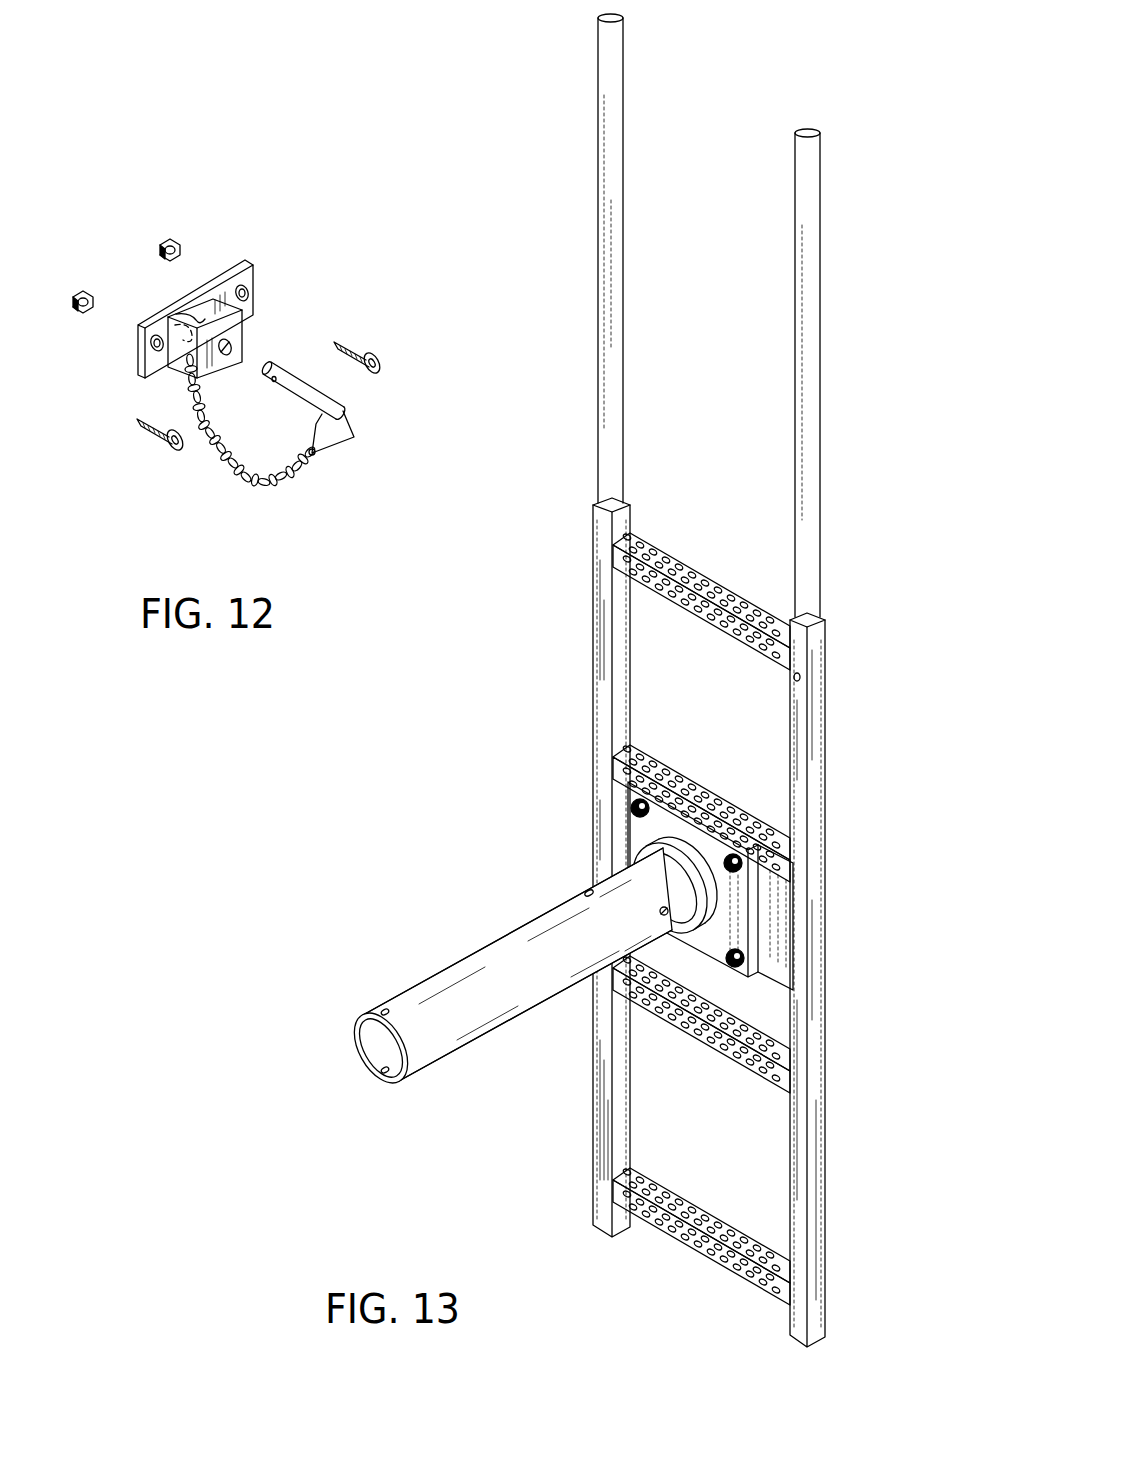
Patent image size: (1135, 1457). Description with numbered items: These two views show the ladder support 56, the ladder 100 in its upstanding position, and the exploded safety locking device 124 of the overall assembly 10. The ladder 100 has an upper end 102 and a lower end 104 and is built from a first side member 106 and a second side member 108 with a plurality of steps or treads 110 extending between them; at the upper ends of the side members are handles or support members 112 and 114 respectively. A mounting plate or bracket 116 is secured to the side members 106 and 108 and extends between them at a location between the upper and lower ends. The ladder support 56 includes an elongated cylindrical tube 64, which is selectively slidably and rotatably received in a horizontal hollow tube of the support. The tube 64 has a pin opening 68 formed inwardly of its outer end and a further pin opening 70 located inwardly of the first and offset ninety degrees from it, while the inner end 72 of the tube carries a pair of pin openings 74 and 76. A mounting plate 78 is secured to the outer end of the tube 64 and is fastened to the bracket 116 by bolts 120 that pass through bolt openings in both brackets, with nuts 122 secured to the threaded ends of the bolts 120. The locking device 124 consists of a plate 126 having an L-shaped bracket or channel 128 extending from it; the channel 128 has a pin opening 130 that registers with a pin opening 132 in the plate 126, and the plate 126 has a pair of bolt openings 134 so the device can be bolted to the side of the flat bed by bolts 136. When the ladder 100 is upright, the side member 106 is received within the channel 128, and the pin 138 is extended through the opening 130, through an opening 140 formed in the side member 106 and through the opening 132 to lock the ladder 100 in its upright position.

In FIG. 13, the ladder assembly 10 is at (602, 685).
In FIG. 13, the ladder support 56 is at (602, 949).
In FIG. 13, the elongated cylindrical tube 64 is at (576, 999).
In FIG. 13, the pin opening 68 is at (668, 912).
In FIG. 13, the pin opening 70 is at (590, 892).
In FIG. 13, the inner end 72 is at (355, 1040).
In FIG. 13, the pin opening 74 is at (384, 1009).
In FIG. 13, the pin opening 76 is at (385, 1074).
In FIG. 13, the mounting plate 78 is at (713, 840).
In FIG. 13, the ladder 100 is at (713, 685).
In FIG. 13, the upper end 102 is at (762, 315).
In FIG. 13, the lower end 104 is at (717, 1282).
In FIG. 13, the first side member 106 is at (863, 980).
In FIG. 13, the second side member 108 is at (586, 1034).
In FIG. 13, the steps or treads 110 is at (717, 1220).
In FIG. 13, the handle or support member 112 is at (812, 386).
In FIG. 13, the handle or support member 114 is at (624, 353).
In FIG. 13, the mounting plate or bracket 116 is at (713, 893).
In FIG. 13, the bolts 120 is at (633, 805).
In FIG. 13, the nuts 122 is at (748, 958).
In FIG. 12, the locking device 124 is at (277, 355).
In FIG. 12, the plate 126 is at (223, 267).
In FIG. 12, the L-shaped bracket or channel 128 is at (240, 335).
In FIG. 12, the pin opening 130 is at (230, 357).
In FIG. 12, the pin opening 132 is at (162, 312).
In FIG. 12, the bolt openings 134 is at (254, 265).
In FIG. 12, the bolts 136 is at (360, 338).
In FIG. 12, the pin 138 is at (320, 388).
In FIG. 12, the opening 140 is at (293, 487).
In FIG. 13, the opening 140 is at (800, 680).